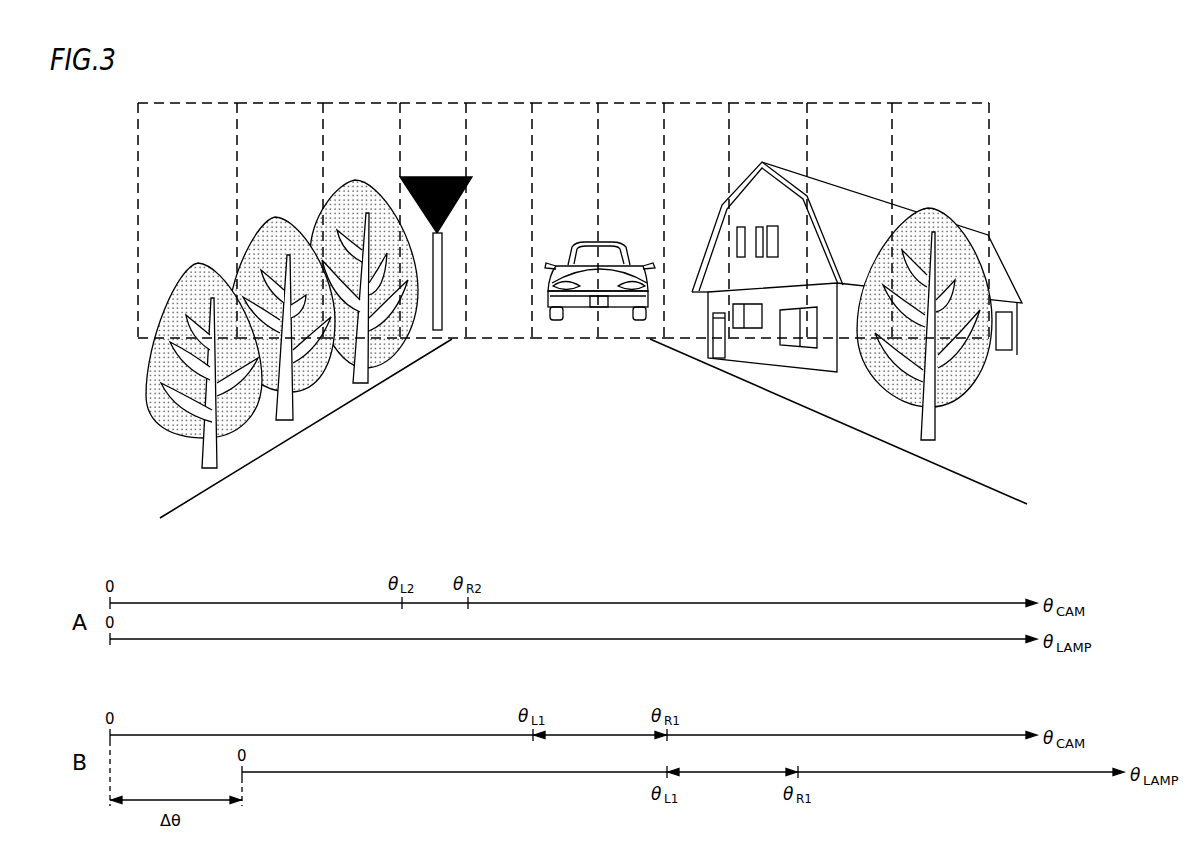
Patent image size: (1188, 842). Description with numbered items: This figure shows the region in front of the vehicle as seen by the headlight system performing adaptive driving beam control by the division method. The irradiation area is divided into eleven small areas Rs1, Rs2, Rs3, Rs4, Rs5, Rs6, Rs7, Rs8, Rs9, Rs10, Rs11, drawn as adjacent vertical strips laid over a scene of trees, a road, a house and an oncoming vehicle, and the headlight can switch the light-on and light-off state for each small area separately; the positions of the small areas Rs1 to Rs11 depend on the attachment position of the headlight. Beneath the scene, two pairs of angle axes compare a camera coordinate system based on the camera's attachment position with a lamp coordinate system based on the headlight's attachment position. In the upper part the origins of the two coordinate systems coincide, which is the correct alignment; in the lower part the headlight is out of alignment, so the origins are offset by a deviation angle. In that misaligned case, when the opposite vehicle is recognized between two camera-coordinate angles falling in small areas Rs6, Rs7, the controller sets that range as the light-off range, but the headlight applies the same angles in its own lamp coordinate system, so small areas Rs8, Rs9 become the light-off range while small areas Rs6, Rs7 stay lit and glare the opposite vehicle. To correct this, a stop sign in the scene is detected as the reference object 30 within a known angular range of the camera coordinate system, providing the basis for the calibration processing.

The reference object 30 is at (452, 217).
The small area Rs1 is at (187, 220).
The small area Rs2 is at (280, 220).
The small area Rs3 is at (361, 220).
The small area Rs4 is at (433, 220).
The small area Rs5 is at (499, 220).
The small area Rs6 is at (565, 220).
The small area Rs7 is at (631, 220).
The small area Rs8 is at (696, 220).
The small area Rs9 is at (768, 220).
The small area Rs10 is at (849, 220).
The small area Rs11 is at (940, 220).